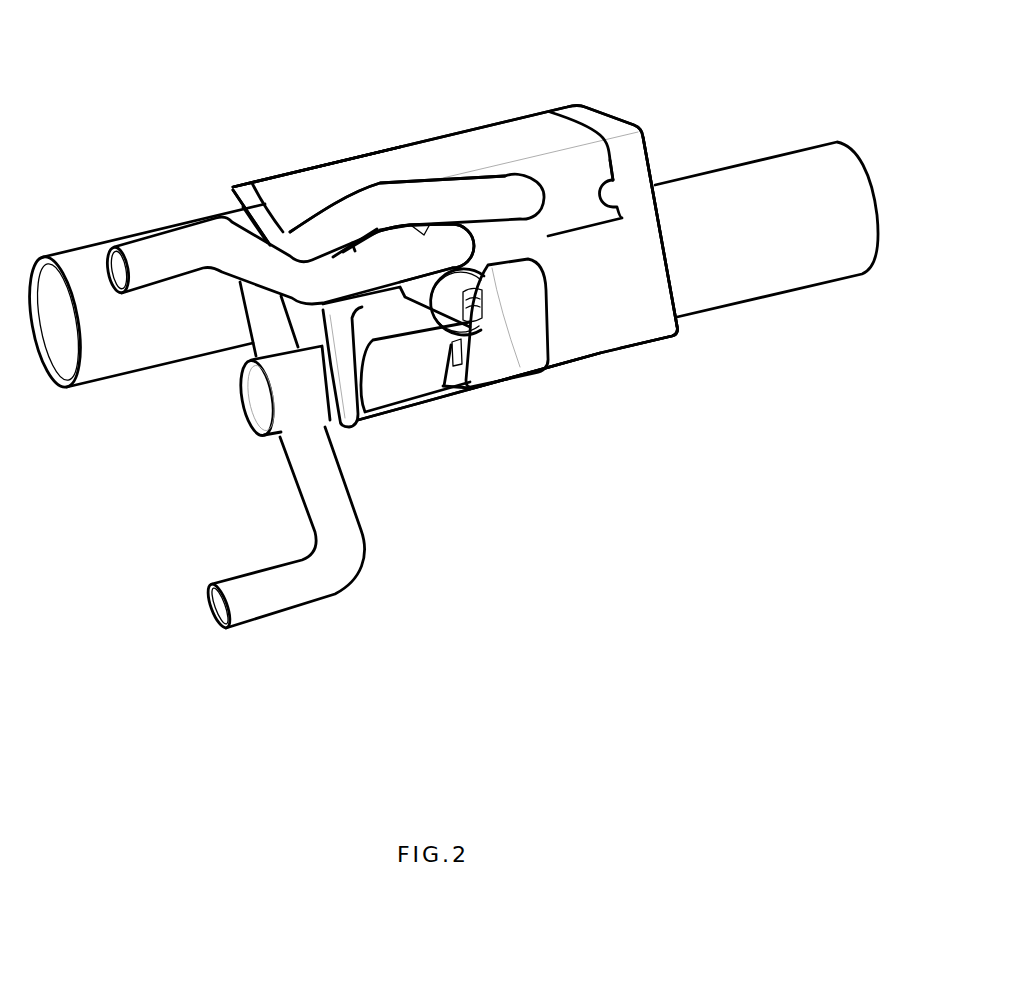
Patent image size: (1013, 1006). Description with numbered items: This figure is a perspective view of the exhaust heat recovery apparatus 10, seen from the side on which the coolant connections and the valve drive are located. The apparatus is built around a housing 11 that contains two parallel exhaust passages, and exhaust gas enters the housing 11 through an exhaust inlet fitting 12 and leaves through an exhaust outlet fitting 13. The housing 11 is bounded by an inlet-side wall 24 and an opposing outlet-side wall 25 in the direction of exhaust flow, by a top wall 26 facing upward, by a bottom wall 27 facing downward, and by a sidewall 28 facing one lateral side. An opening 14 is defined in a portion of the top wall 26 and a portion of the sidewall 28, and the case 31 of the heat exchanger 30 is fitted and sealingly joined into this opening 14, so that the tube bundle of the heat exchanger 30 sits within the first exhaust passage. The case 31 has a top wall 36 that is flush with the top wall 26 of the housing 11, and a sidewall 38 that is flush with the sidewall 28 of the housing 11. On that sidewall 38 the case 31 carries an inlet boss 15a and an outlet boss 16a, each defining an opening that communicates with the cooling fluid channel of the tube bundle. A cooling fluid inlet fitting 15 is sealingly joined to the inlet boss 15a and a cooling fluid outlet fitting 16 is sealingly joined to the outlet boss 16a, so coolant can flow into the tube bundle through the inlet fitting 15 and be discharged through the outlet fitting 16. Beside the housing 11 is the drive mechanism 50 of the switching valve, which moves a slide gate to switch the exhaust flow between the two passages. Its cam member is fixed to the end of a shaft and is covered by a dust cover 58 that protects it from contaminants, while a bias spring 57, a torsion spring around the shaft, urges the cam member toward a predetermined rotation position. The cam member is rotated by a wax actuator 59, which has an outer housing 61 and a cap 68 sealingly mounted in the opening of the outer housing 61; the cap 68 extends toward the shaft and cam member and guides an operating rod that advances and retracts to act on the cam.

The exhaust heat recovery apparatus 10 is at (76, 60).
The housing 11 is at (564, 100).
The exhaust inlet fitting 12 is at (103, 368).
The exhaust outlet fitting 13 is at (779, 275).
The opening 14 is at (610, 181).
The cooling fluid inlet fitting 15 is at (158, 252).
The inlet boss 15a is at (417, 200).
The cooling fluid outlet fitting 16 is at (440, 193).
The outlet boss 16a is at (518, 175).
The inlet-side wall 24 is at (238, 196).
The outlet-side wall 25 is at (663, 237).
The top wall 26 is at (240, 198).
The bottom wall 27 is at (548, 375).
The sidewall 28 is at (652, 335).
The heat exchanger 30 is at (332, 72).
The case 31 is at (321, 156).
The top wall 36 is at (357, 170).
The sidewall 38 is at (598, 163).
The drive mechanism 50 is at (492, 410).
The bias spring 57 is at (482, 292).
The dust cover 58 is at (533, 307).
The wax actuator 59 is at (373, 434).
The outer housing 61 is at (258, 405).
The cap 68 is at (415, 376).